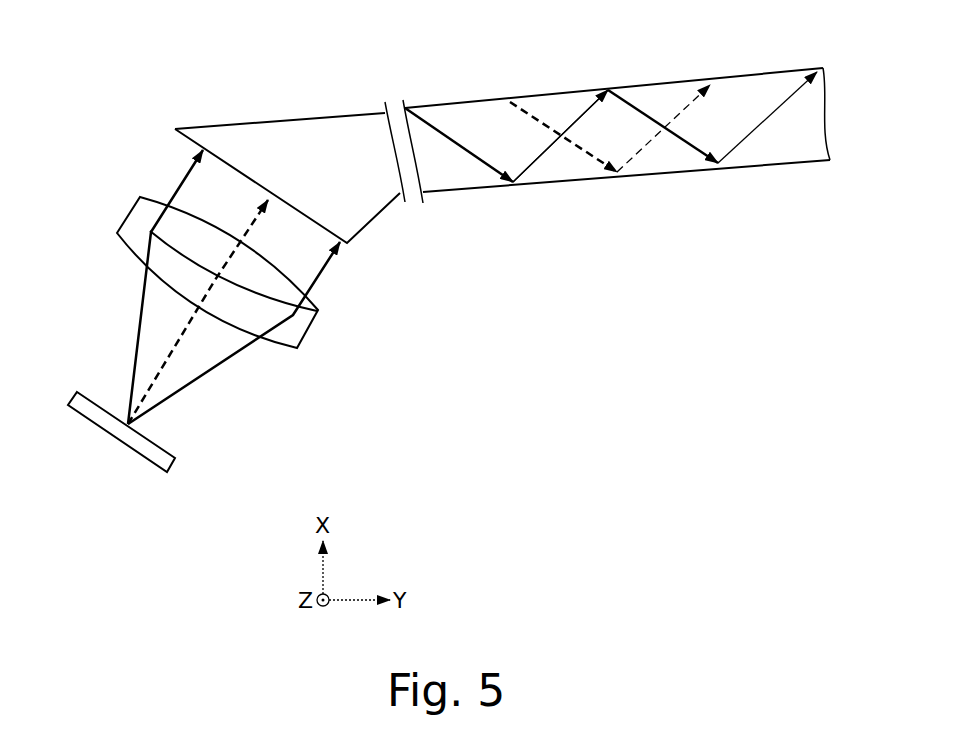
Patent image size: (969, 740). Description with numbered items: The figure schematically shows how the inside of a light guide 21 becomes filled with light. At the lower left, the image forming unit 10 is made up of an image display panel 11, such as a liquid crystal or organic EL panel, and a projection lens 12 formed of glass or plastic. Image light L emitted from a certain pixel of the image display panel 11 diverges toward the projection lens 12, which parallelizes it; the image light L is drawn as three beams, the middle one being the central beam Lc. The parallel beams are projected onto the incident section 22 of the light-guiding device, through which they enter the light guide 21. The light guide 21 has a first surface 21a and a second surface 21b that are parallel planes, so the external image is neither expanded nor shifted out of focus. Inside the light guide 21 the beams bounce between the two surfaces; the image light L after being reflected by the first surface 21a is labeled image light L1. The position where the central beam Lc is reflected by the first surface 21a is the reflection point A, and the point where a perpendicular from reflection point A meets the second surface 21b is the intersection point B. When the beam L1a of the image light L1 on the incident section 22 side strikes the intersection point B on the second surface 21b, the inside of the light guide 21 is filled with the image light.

The image forming unit 10 is at (260, 334).
The image display panel 11 is at (160, 453).
The projection lens 12 is at (300, 323).
The light guide 21 is at (502, 149).
The first surface 21a is at (750, 167).
The second surface 21b is at (777, 72).
The incident section 22 is at (370, 212).
The image light L is at (175, 191).
The central beam Lc is at (167, 355).
The image light after reflection L1 is at (777, 110).
The beam on the incident section side L1a is at (573, 123).
The reflection point A is at (617, 178).
The intersection point B is at (608, 88).